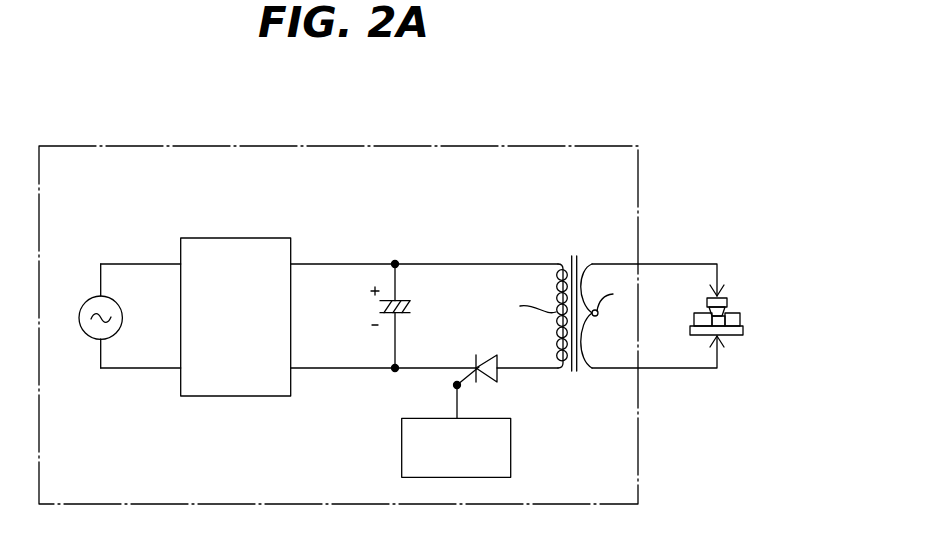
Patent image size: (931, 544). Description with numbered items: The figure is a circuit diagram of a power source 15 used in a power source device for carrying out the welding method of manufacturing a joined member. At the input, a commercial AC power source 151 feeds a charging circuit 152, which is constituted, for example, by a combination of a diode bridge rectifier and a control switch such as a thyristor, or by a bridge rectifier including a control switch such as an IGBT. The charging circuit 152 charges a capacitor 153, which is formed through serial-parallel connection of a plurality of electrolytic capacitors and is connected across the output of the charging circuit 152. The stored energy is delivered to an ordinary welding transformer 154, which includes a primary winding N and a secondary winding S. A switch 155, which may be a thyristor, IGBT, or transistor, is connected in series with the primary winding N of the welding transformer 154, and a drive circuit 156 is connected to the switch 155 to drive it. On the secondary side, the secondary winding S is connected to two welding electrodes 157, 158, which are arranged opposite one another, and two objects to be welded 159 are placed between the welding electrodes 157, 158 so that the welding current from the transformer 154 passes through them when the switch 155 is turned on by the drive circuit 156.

The power supply unit 15 is at (506, 145).
The commercial AC power source 151 is at (99, 296).
The charging circuit 152 is at (248, 238).
The capacitor 153 is at (403, 300).
The welding transformer 154 is at (577, 257).
The switch 155 is at (489, 376).
The drive circuit 156 is at (511, 448).
The welding electrode 157 is at (727, 300).
The welding electrode 158 is at (727, 336).
The objects to be welded 159 is at (747, 313).